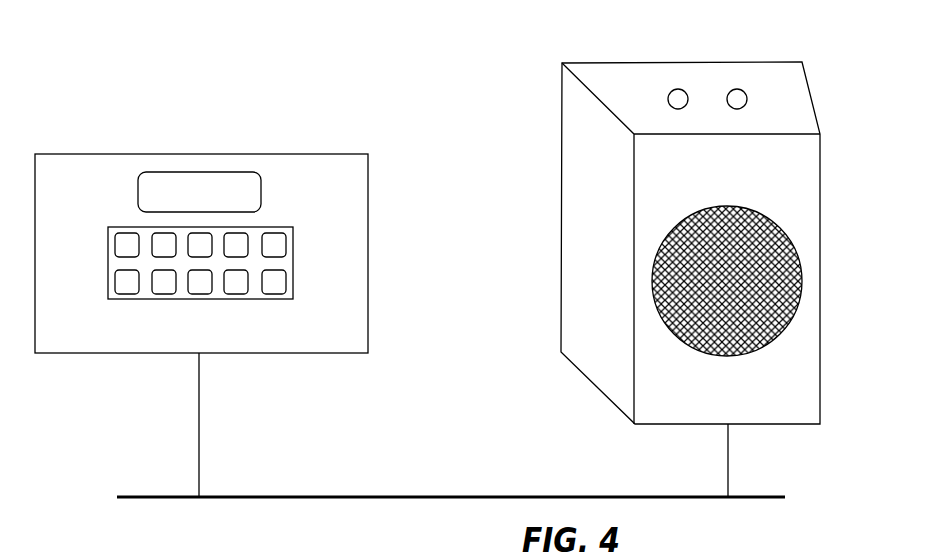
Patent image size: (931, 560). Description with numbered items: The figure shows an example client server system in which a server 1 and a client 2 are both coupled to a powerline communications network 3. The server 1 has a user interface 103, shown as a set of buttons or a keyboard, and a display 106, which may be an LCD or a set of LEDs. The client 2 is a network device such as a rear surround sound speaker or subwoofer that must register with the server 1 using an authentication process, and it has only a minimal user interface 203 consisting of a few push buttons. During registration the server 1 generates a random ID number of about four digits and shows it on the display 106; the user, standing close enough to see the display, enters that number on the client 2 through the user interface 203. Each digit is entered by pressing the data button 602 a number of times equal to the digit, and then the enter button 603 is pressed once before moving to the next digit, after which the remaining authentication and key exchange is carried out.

The server 1 is at (255, 353).
The client 2 is at (561, 260).
The powerline communications (PLC) network 3 is at (367, 497).
The user interface 103 is at (293, 263).
The display 106 is at (262, 190).
The user interface 203 is at (620, 98).
The data button 602 is at (667, 97).
The enter button 603 is at (750, 97).